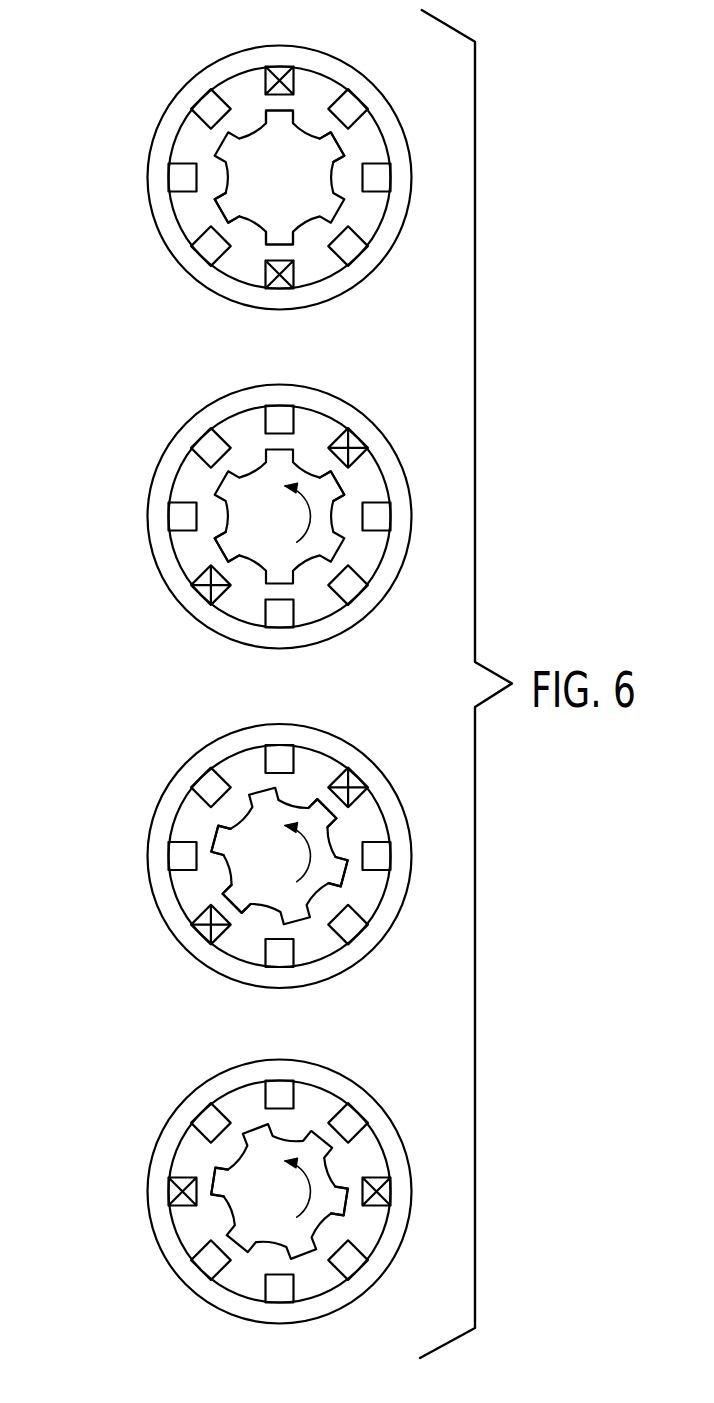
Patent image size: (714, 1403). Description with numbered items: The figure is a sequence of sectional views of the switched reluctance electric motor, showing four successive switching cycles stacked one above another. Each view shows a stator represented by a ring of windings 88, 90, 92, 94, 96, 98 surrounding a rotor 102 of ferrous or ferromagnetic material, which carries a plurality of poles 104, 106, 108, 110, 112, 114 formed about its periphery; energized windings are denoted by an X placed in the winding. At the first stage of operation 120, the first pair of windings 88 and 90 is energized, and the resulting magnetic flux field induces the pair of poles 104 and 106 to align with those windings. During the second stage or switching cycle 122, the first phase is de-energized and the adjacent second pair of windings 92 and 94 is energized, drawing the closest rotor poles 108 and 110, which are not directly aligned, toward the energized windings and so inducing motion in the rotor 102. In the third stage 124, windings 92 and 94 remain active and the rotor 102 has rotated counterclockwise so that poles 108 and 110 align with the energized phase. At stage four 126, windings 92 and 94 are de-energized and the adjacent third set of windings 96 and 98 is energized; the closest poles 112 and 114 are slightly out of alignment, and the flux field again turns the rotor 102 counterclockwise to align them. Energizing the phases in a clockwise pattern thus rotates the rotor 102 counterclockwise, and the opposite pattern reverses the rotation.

The winding 88 is at (292, 82).
The winding 90 is at (292, 275).
The winding 92 is at (333, 432).
The winding 94 is at (223, 600).
The winding 96 is at (375, 1192).
The winding 98 is at (175, 1175).
The rotor 102 is at (299, 192).
The pole 104 is at (257, 117).
The pole 106 is at (277, 247).
The pole 108 is at (343, 138).
The pole 110 is at (222, 216).
The pole 112 is at (343, 873).
The pole 114 is at (208, 832).
The first stage of operation 120 is at (108, 170).
The second stage 122 is at (108, 509).
The third stage 124 is at (108, 848).
The stage four 126 is at (108, 1183).